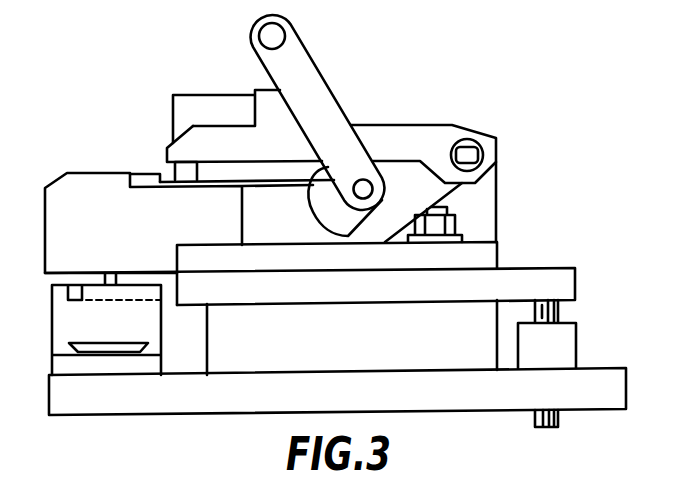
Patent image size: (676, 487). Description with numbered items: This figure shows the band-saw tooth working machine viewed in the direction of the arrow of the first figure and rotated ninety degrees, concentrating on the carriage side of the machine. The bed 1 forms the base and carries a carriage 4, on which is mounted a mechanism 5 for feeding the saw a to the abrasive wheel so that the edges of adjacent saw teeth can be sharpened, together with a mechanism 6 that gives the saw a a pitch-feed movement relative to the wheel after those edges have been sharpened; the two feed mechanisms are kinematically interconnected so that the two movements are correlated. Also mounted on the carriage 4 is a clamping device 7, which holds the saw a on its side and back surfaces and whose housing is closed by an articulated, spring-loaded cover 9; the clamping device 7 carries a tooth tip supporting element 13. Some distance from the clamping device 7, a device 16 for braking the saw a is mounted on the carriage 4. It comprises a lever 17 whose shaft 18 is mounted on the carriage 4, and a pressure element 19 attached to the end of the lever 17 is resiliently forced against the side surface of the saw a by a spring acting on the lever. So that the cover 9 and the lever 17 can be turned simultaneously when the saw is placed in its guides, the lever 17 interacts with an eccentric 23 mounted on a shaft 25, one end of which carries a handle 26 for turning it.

The bed 1 is at (588, 378).
The carriage 4 is at (547, 277).
The mechanism for feeding the saw 5 is at (498, 246).
The pitch-feed mechanism 6 is at (62, 177).
The clamping device 7 is at (498, 192).
The cover 9 is at (202, 107).
The tooth tip supporting element 13 is at (138, 173).
The device for braking the saw 16 is at (452, 125).
The lever 17 is at (183, 143).
The shaft 18 is at (469, 147).
The pressure element 19 is at (190, 172).
The eccentric 23 is at (327, 210).
The shaft 25 is at (373, 191).
The handle 26 is at (303, 68).
The band saw a is at (163, 177).